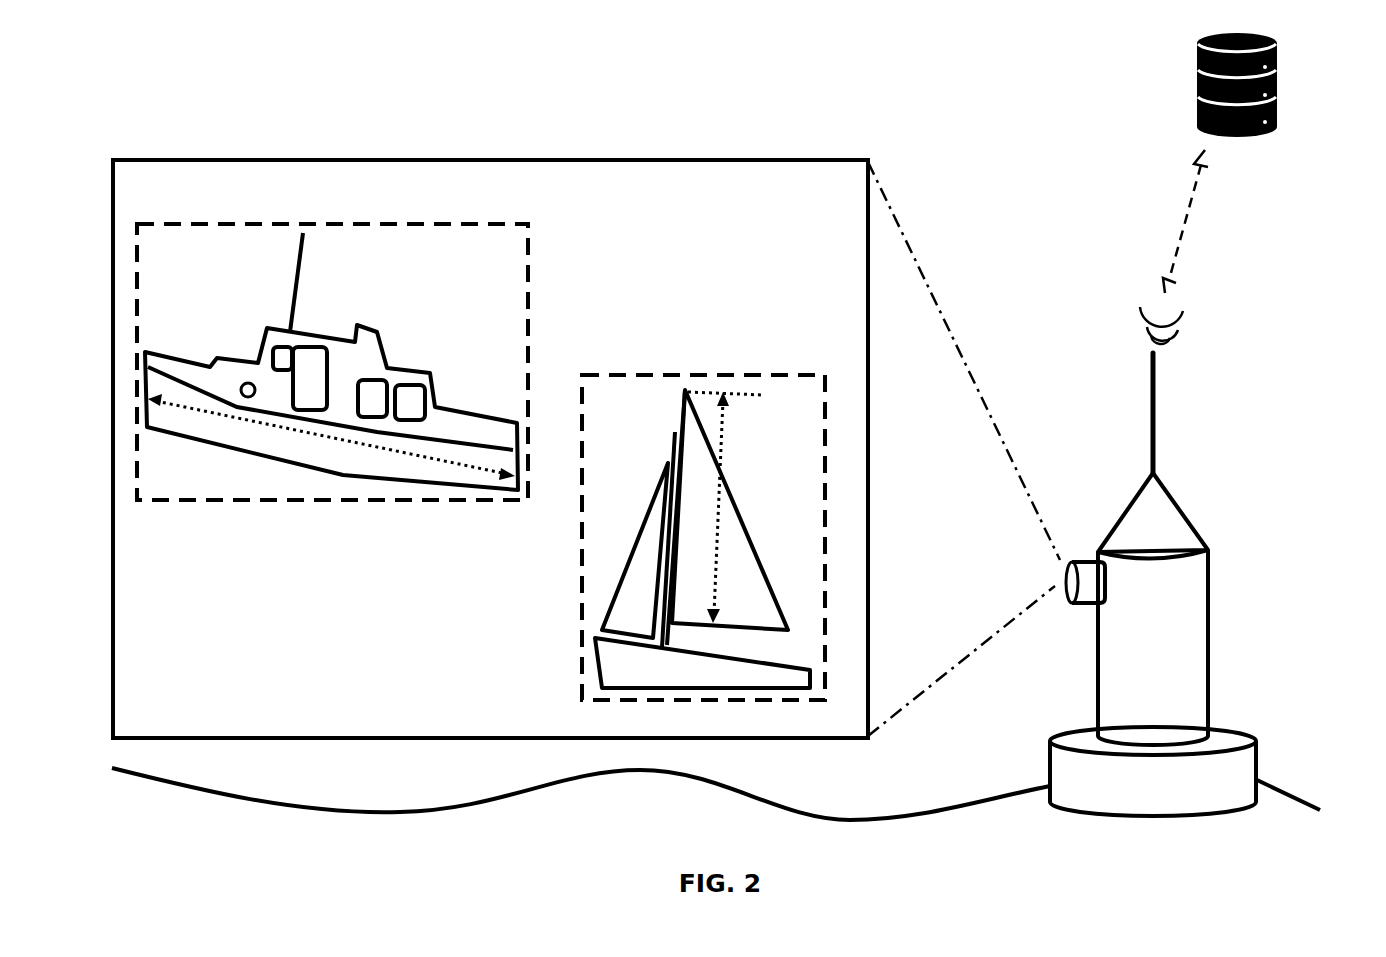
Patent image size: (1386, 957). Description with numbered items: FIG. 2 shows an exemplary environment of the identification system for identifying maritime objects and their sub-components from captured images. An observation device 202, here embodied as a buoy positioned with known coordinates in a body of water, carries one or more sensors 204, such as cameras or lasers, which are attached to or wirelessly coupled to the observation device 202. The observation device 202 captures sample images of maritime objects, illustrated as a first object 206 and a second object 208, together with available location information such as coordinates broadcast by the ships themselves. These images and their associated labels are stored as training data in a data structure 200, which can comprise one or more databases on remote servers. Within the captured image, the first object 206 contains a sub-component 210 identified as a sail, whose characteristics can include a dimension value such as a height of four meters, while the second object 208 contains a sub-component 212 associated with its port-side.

The data structure 200 is at (1230, 138).
The observation device 202 is at (1210, 640).
The sensors 204 is at (1090, 560).
The first object 206 is at (640, 373).
The second object 208 is at (220, 505).
The sub-component 210 is at (733, 510).
The sub-component 212 is at (387, 452).